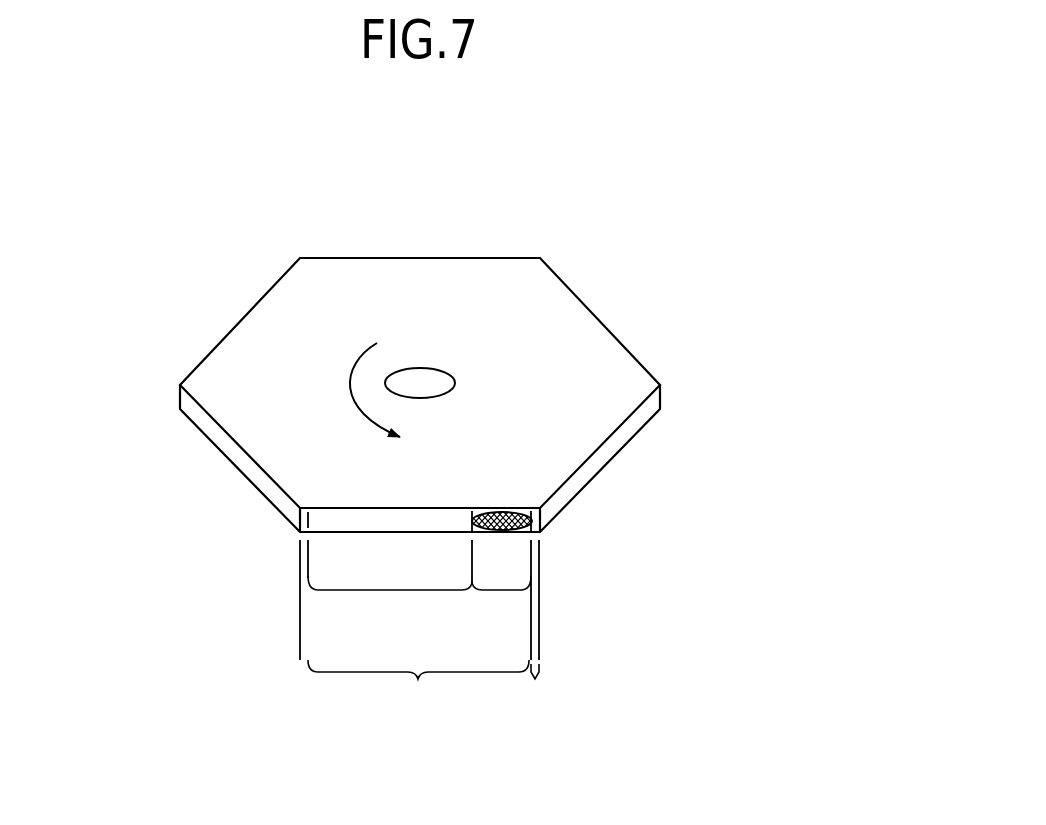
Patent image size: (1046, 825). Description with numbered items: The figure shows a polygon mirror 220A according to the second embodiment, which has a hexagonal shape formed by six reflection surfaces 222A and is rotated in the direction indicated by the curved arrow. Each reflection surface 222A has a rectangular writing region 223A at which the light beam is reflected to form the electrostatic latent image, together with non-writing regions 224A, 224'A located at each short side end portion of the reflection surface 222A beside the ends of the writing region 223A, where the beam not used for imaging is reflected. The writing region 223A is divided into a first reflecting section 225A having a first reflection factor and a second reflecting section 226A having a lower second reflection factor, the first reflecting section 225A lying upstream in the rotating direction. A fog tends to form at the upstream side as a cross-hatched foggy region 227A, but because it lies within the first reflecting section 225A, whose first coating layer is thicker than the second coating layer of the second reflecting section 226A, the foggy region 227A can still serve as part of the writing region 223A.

The polygon mirror 220A is at (595, 163).
The reflection surface 222A is at (416, 240).
The writing region 223A is at (418, 702).
The non-writing region 224A is at (633, 626).
The non-writing region 224'A is at (188, 628).
The first reflecting section 225A is at (500, 590).
The second reflecting section 226A is at (390, 590).
The foggy region 227A is at (537, 510).